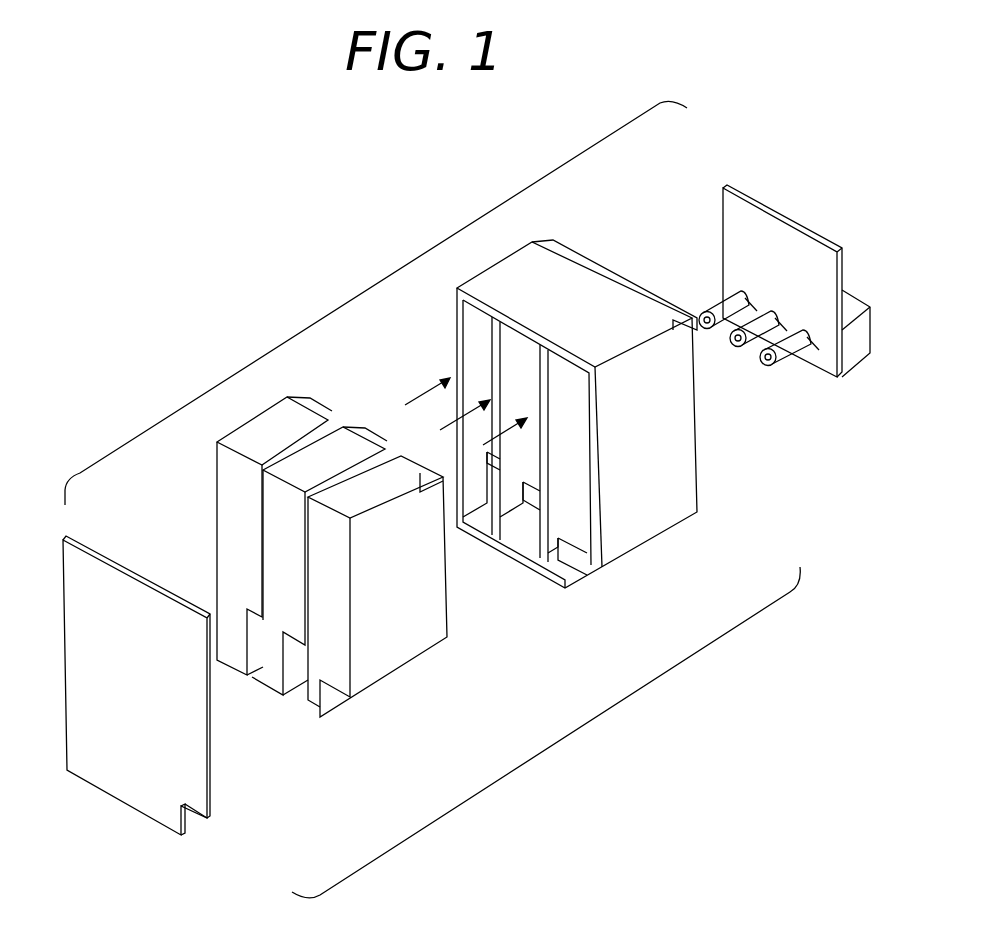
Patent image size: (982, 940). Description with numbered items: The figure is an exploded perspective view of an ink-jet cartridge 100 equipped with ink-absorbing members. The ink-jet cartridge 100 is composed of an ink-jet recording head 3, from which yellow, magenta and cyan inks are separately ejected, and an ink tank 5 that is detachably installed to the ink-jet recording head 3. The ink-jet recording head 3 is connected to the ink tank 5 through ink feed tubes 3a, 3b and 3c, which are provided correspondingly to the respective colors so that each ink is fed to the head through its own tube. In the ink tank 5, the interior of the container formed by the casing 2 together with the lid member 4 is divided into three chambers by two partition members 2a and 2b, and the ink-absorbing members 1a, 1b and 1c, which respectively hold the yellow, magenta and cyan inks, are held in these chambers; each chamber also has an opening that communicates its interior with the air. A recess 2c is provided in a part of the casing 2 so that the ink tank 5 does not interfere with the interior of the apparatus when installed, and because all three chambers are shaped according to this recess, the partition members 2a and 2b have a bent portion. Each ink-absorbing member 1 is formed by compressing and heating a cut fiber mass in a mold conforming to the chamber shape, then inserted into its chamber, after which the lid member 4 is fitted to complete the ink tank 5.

The ink-jet cartridge 100 is at (368, 290).
The ink-absorbing member 1 is at (332, 590).
The ink-absorbing member 1a is at (232, 652).
The ink-absorbing member 1b is at (270, 676).
The ink-absorbing member 1c is at (308, 697).
The casing 2 is at (577, 441).
The partition member 2a is at (487, 540).
The partition member 2b is at (522, 550).
The recess 2c is at (583, 568).
The ink-jet recording head 3 is at (776, 312).
The ink feed tube 3a is at (712, 300).
The ink feed tube 3b is at (740, 346).
The ink feed tube 3c is at (772, 365).
The lid member 4 is at (195, 783).
The ink tank 5 is at (562, 748).